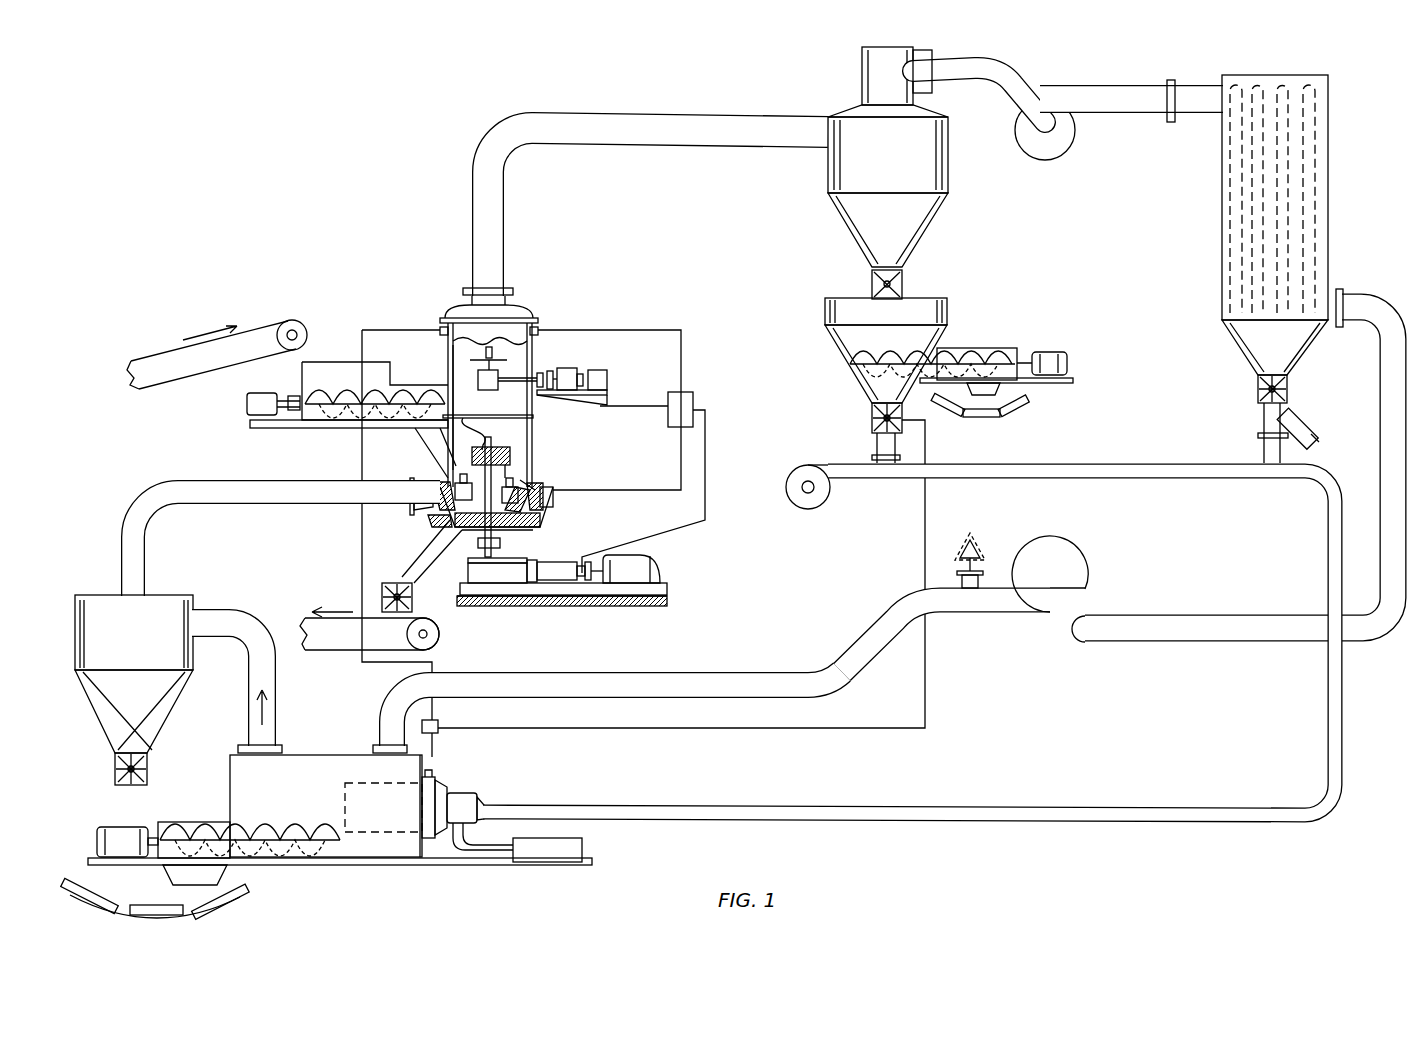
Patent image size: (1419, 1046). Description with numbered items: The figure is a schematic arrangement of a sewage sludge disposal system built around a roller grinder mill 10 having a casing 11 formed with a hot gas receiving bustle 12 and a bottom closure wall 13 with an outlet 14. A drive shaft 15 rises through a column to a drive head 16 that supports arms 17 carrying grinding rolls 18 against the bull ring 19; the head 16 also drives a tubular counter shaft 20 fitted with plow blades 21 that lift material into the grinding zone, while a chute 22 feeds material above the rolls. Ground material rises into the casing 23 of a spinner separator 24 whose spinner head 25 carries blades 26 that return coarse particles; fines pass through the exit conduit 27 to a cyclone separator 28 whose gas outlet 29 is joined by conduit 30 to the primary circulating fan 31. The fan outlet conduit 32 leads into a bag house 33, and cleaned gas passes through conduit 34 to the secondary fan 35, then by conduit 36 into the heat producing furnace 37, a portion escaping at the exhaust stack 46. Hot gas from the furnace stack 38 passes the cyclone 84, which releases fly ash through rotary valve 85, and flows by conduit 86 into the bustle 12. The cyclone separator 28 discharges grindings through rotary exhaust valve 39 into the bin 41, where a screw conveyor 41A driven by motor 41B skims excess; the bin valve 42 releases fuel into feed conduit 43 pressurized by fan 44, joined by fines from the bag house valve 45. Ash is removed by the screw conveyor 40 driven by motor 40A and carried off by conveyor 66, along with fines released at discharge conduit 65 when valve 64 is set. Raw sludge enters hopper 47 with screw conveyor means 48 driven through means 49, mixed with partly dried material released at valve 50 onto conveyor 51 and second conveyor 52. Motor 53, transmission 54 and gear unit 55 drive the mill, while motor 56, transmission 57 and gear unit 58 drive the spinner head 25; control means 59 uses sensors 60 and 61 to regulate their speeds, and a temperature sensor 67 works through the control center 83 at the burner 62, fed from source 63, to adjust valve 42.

The roller grinder mill 10 is at (581, 449).
The casing 11 is at (535, 420).
The bustle 12 is at (553, 503).
The bottom closure wall 13 is at (525, 528).
The outlet 14 is at (458, 536).
The drive shaft 15 is at (500, 540).
The drive head 16 is at (465, 431).
The arms 17 is at (518, 485).
The grinding rolls 18 is at (540, 490).
The bull ring 19 is at (545, 521).
The tubular counter shaft 20 is at (506, 456).
The plow blades 21 is at (540, 530).
The chute 22 is at (422, 440).
The casing of spinner separator 23 is at (448, 373).
The spinner separator 24 is at (439, 290).
The spinner head 25 is at (495, 350).
The blades 26 is at (527, 360).
The exit conduit 27 is at (472, 168).
The cyclone separator 28 is at (830, 160).
The air or gas outlet 29 is at (862, 66).
The conduit 30 is at (1000, 70).
The primary circulating fan 31 is at (1078, 147).
The fan outlet conduit 32 is at (1130, 85).
The bag house 33 is at (1328, 160).
The conduit 34 is at (1360, 320).
The secondary fan 35 is at (1094, 585).
The conduit 36 is at (855, 652).
The heat producing furnace 37 is at (331, 732).
The furnace stack 38 is at (277, 688).
The rotary exhaust valve 39 is at (902, 280).
The screw type ash removal conveyor 40 is at (389, 272).
The motor 40A is at (113, 830).
The ground material receiving bin 41 is at (940, 315).
The screw conveyor 41A is at (975, 350).
The motor 41B is at (1050, 360).
The rotary exhaust valve 42 is at (872, 426).
The feed conduit 43 is at (1068, 470).
The fan 44 is at (845, 491).
The rotary exhaust valve 45 is at (1258, 387).
The exhaust stack 46 is at (983, 580).
The hopper 47 is at (323, 362).
The screw conveyor means 48 is at (303, 428).
The drive means 49 is at (250, 404).
The rotary exhaust valve 50 is at (383, 592).
The conveyor 51 is at (440, 634).
The second conveyor 52 is at (158, 345).
The motor 53 is at (650, 563).
The speed regulatable transmission 54 is at (560, 582).
The gear transmission unit 55 is at (492, 583).
The motor 56 is at (607, 378).
The speed regulatable transmission 57 is at (572, 373).
The gear transmission unit 58 is at (482, 391).
The control means 59 is at (694, 400).
The sensor 60 is at (533, 316).
The sensor 61 is at (553, 492).
The burner 62 is at (470, 797).
The fuel source 63 is at (545, 860).
The valve 64 is at (1268, 425).
The discharge conduit 65 is at (1305, 415).
The conveyor 66 is at (225, 908).
The temperature sensor 67 is at (440, 328).
The control center 83 is at (438, 730).
The cyclone 84 is at (165, 600).
The rotary valve 85 is at (115, 765).
The conduit 86 is at (297, 500).